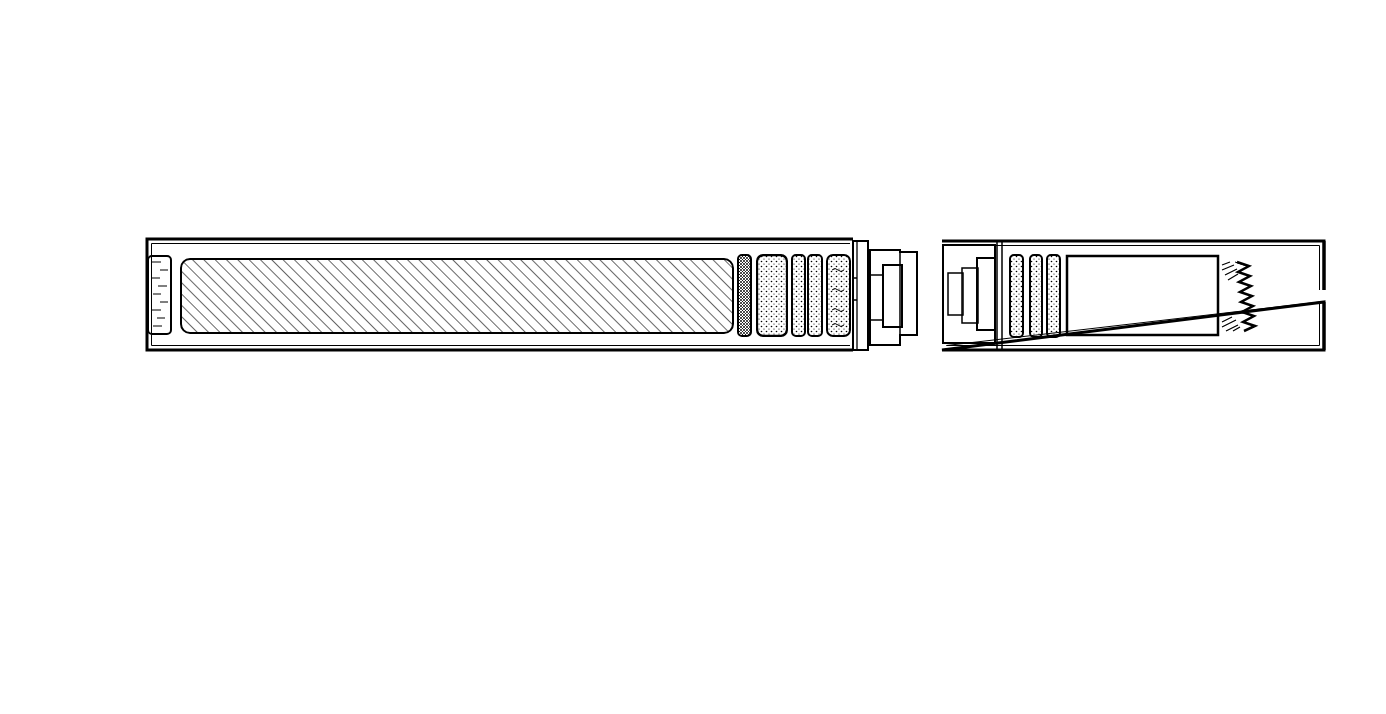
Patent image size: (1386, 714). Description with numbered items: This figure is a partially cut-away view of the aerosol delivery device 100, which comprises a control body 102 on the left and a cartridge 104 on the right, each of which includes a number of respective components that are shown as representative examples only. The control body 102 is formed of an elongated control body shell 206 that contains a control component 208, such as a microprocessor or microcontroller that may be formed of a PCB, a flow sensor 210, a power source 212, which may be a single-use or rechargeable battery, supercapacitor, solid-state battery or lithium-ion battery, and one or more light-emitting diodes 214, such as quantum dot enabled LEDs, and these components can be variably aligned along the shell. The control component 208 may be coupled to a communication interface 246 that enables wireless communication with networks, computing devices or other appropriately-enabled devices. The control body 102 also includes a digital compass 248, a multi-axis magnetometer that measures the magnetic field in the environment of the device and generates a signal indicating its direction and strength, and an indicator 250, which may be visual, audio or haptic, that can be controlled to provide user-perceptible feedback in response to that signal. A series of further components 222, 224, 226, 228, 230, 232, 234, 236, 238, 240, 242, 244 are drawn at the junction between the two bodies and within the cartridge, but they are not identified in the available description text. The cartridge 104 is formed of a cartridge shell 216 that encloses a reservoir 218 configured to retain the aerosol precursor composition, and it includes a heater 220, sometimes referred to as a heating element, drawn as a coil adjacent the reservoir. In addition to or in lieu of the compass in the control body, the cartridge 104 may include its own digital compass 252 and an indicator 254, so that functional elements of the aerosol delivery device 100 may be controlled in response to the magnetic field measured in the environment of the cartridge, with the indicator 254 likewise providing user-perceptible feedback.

The aerosol delivery device 100 is at (594, 57).
The control body 102 is at (753, 338).
The cartridge 104 is at (1103, 134).
The control body shell 206 is at (500, 319).
The control component 208 is at (752, 328).
The flow sensor 210 is at (853, 358).
The power source 212 is at (457, 329).
The light-emitting diodes 214 is at (180, 328).
The cartridge shell 216 is at (1133, 337).
The reservoir 218 is at (1142, 319).
The heater 220 is at (1297, 324).
The spring seat 222 is at (1261, 331).
The end wall 224 is at (1283, 274).
The seal 226 is at (1040, 322).
The divider wall 228 is at (1022, 329).
The connector flange 230 is at (924, 368).
The connector body 232 is at (876, 255).
The receptacle contact 234 is at (999, 265).
The gasket 236 is at (825, 263).
The connector plug 238 is at (923, 267).
The connector receptacle 240 is at (922, 244).
The connector base 242 is at (902, 389).
The receptacle housing 244 is at (982, 346).
The communication interface 246 is at (721, 263).
The digital compass 248 is at (773, 263).
The indicator 250 is at (791, 339).
The digital compass 252 is at (1076, 269).
The indicator 254 is at (1060, 256).